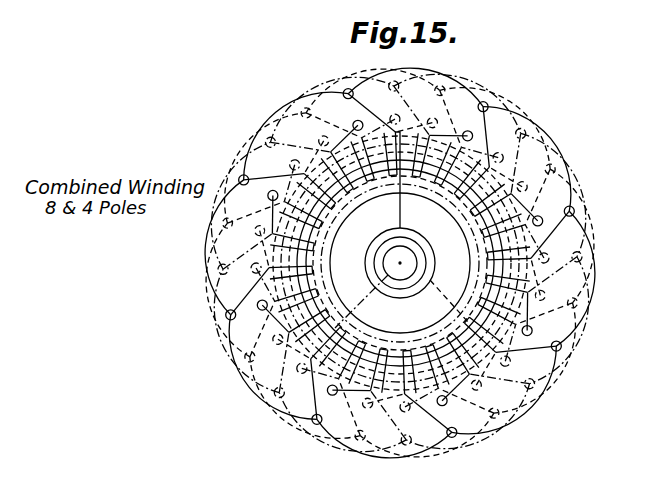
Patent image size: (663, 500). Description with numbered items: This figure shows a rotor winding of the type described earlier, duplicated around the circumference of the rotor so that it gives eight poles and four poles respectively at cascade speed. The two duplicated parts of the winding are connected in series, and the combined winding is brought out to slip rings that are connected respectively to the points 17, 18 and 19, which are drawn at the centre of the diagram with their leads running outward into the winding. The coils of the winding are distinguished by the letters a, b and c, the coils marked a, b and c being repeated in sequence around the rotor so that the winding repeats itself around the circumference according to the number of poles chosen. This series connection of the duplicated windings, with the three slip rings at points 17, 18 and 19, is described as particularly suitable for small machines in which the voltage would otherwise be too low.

The slip ring connection point 17 is at (400, 215).
The slip ring connection point 18 is at (382, 284).
The slip ring connection point 19 is at (427, 266).
The phase a coils a is at (399, 262).
The phase b coils b is at (400, 263).
The phase c coils c is at (400, 263).